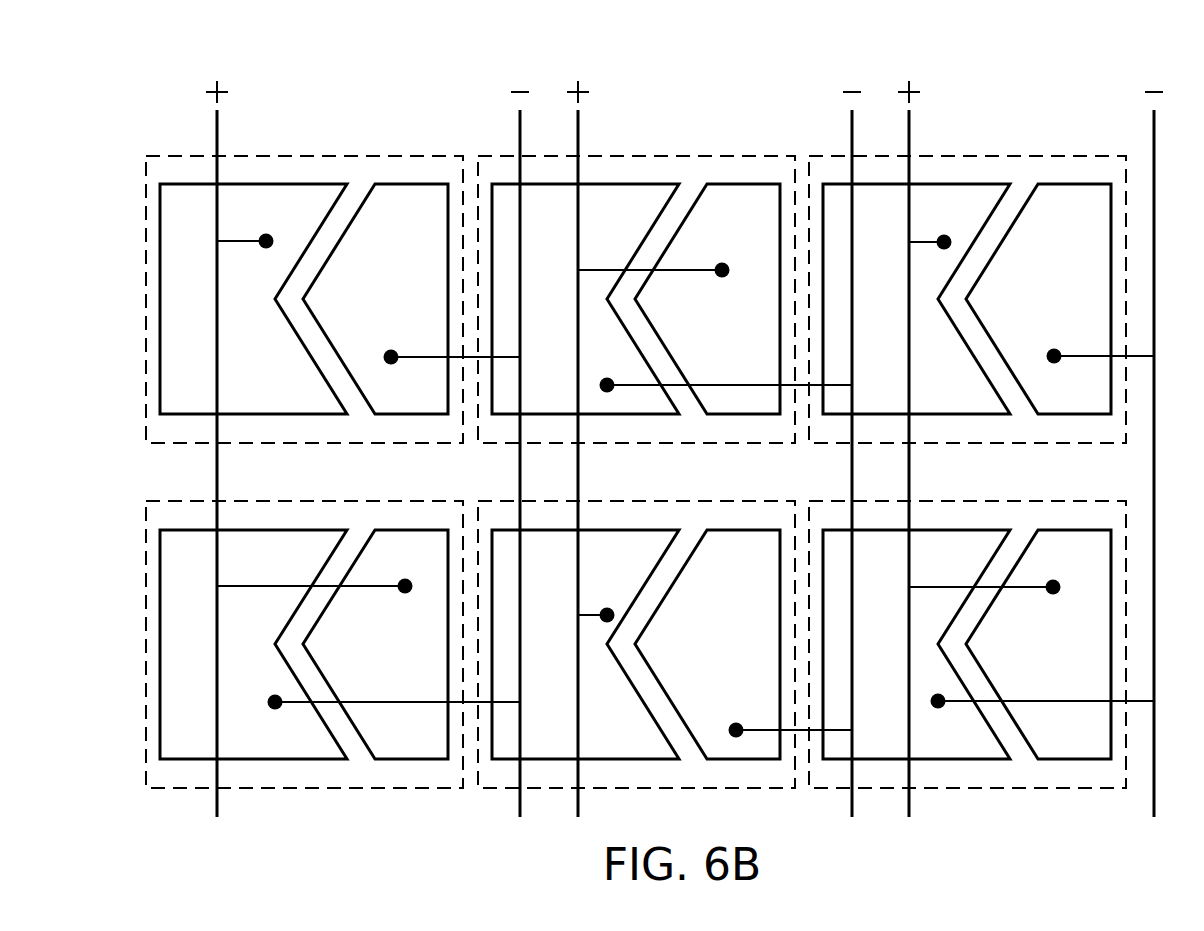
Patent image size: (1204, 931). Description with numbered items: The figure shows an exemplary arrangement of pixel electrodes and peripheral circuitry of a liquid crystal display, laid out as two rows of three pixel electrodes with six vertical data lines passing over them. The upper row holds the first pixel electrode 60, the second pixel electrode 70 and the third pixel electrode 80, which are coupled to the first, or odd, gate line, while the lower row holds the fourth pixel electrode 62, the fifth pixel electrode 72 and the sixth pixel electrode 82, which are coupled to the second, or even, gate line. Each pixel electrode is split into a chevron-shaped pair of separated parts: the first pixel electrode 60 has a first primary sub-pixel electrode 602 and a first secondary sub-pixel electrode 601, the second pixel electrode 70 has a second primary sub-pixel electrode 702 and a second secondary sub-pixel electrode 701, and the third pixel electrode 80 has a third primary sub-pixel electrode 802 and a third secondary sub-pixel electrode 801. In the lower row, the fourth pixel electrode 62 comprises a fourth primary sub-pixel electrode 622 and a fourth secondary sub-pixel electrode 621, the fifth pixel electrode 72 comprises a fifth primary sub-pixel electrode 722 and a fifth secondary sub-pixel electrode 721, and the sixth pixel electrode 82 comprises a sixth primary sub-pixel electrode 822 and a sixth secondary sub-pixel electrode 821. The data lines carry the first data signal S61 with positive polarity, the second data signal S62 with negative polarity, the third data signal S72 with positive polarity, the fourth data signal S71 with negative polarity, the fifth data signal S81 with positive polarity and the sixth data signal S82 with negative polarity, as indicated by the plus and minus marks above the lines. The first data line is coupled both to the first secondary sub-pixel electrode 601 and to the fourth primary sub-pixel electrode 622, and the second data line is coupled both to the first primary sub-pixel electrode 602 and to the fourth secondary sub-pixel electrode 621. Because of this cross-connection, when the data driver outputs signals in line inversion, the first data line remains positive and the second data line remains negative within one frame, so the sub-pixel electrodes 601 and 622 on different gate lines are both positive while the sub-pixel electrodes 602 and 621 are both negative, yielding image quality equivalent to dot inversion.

The first pixel electrode 60 is at (303, 156).
The first secondary sub-pixel electrode 601 is at (253, 299).
The first primary sub-pixel electrode 602 is at (411, 299).
The second pixel electrode 70 is at (635, 156).
The second secondary sub-pixel electrode 701 is at (611, 299).
The second primary sub-pixel electrode 702 is at (726, 299).
The third pixel electrode 80 is at (966, 156).
The third secondary sub-pixel electrode 801 is at (916, 299).
The third primary sub-pixel electrode 802 is at (1060, 299).
The fourth pixel electrode 62 is at (303, 501).
The fourth secondary sub-pixel electrode 621 is at (340, 644).
The fourth primary sub-pixel electrode 622 is at (332, 644).
The fifth pixel electrode 72 is at (635, 501).
The fifth secondary sub-pixel electrode 721 is at (585, 644).
The fifth primary sub-pixel electrode 722 is at (743, 644).
The sixth pixel electrode 82 is at (966, 501).
The sixth secondary sub-pixel electrode 821 is at (988, 644).
The sixth primary sub-pixel electrode 822 is at (1010, 644).
The first data signal S61 is at (215, 439).
The second data signal S62 is at (518, 439).
The third data signal S72 is at (578, 439).
The fourth data signal S71 is at (849, 439).
The fifth data signal S81 is at (908, 439).
The sixth data signal S82 is at (1153, 439).